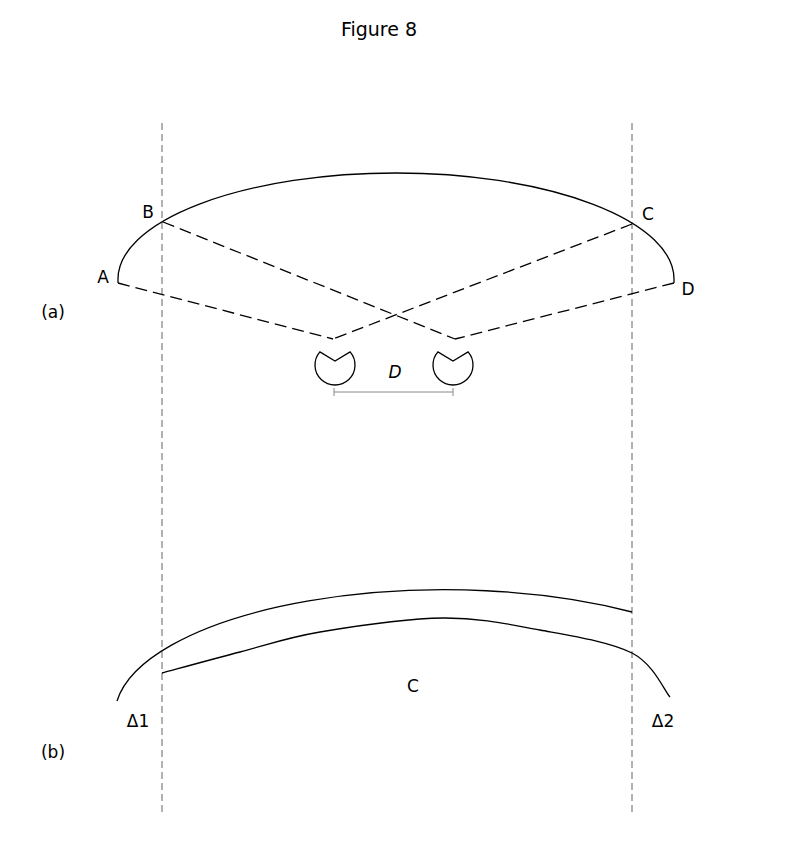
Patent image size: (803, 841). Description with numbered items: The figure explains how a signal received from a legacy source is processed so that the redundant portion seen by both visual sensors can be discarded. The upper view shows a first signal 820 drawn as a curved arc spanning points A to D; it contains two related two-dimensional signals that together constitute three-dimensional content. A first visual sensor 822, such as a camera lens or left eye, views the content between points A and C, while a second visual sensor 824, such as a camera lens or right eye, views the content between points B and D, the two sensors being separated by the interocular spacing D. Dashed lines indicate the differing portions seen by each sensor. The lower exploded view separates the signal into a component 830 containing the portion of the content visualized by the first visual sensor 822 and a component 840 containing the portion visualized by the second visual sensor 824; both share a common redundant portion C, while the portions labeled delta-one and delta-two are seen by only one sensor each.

The first signal 820 is at (118, 265).
The first visual sensor 822 is at (317, 375).
The second visual sensor 824 is at (471, 375).
The component of the 2-D signal for the first visual sensor 830 is at (130, 677).
The component of the 2-D signal for the second visual sensor 840 is at (662, 682).